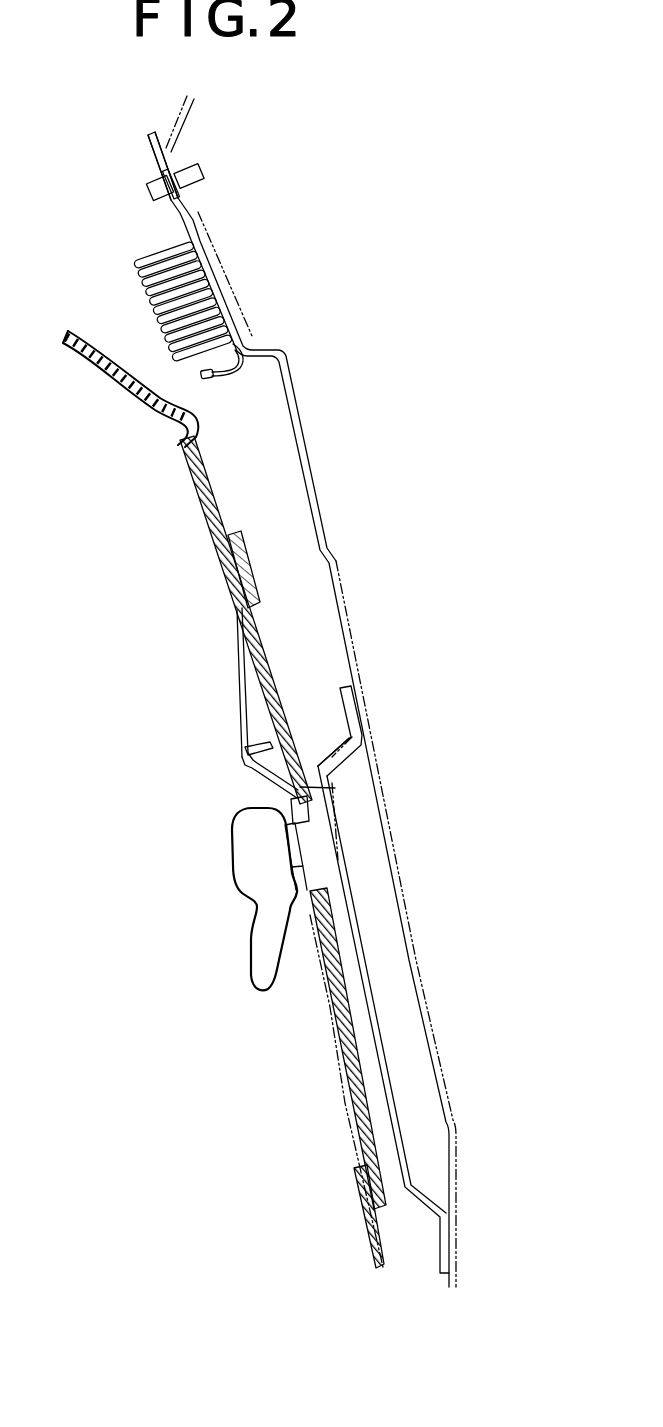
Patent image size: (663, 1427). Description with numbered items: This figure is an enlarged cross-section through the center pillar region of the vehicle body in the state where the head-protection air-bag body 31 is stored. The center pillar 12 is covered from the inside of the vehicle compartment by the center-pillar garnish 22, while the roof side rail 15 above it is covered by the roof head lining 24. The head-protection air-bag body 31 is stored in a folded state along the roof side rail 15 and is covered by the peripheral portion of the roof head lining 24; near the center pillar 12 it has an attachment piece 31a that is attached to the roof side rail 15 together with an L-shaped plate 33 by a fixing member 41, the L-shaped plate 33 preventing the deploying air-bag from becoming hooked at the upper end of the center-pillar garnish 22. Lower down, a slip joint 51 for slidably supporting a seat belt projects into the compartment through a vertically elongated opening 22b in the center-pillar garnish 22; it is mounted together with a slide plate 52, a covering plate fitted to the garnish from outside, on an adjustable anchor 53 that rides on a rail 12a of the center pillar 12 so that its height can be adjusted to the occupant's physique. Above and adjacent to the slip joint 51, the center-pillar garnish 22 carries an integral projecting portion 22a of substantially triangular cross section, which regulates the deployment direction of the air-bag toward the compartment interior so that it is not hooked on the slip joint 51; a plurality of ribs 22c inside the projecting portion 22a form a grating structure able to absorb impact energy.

The center pillar 12 is at (351, 636).
The rail 12a is at (337, 790).
The roof side rail 15 is at (190, 103).
The center-pillar garnish 22 is at (198, 488).
The projecting portion 22a is at (243, 752).
The vertically elongated opening 22b is at (360, 1152).
The ribs 22c is at (263, 703).
The roof head lining 24 is at (77, 352).
The head-protection air-bag body 31 is at (140, 278).
The attachment piece 31a is at (150, 156).
The L-shaped plate 33 is at (230, 372).
The fixing member 41 is at (156, 193).
The slip joint 51 is at (255, 863).
The slide plate 52 is at (350, 1056).
The adjustable anchor 53 is at (305, 821).